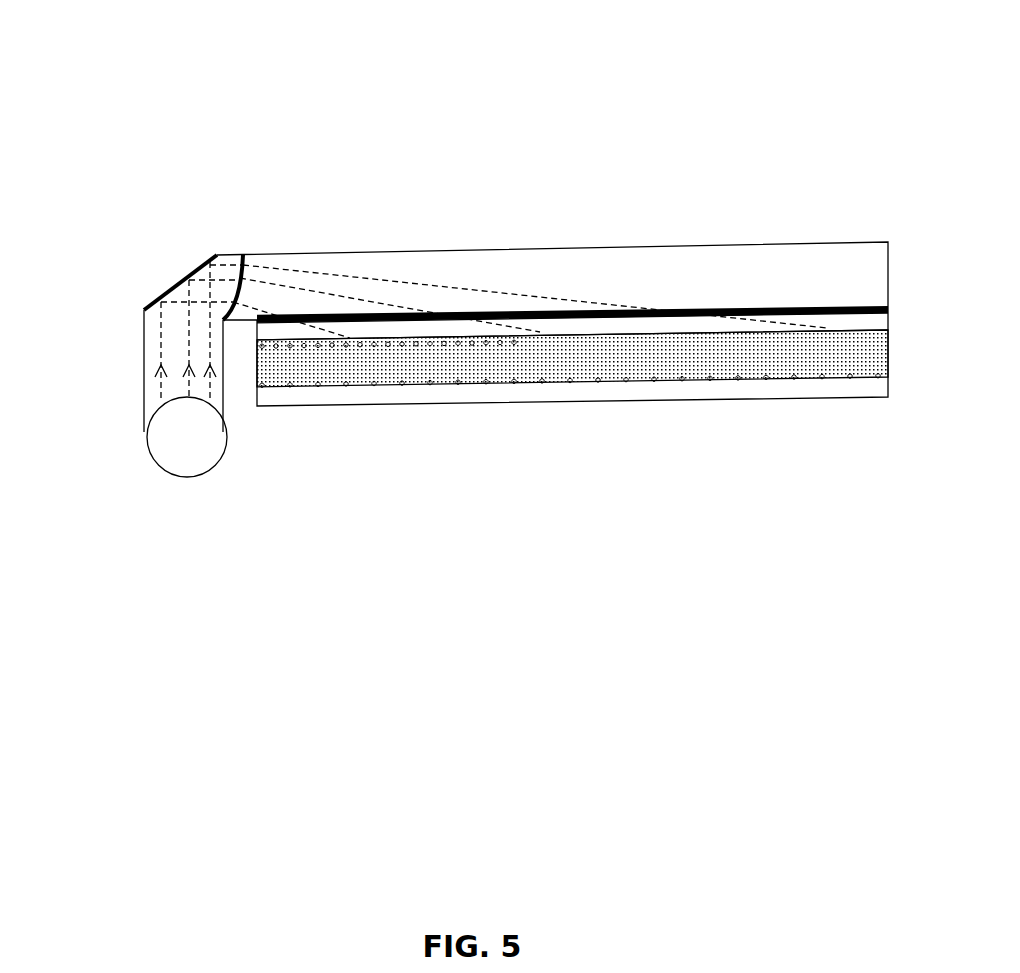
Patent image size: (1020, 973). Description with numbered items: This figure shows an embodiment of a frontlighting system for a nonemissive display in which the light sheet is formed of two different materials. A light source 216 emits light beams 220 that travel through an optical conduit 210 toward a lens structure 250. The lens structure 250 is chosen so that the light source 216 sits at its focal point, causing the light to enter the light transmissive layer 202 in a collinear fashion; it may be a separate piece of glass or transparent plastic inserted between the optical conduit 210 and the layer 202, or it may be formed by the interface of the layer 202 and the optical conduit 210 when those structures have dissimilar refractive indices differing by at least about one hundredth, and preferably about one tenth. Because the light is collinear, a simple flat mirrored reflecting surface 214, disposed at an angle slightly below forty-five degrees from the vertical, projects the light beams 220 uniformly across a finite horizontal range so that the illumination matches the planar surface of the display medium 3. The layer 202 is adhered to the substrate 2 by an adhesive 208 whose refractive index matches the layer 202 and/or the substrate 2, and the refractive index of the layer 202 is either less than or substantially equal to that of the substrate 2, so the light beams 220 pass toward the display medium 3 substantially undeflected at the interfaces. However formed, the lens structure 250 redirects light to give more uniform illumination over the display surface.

The layer 202 is at (597, 280).
The light beams 220 is at (365, 272).
The adhesive 208 is at (600, 315).
The substrate 2 is at (540, 322).
The display medium 3 is at (510, 357).
The reflecting surface 214 is at (178, 285).
The lens structure 250 is at (235, 258).
The optical conduit 210 is at (152, 355).
The light source 216 is at (180, 463).